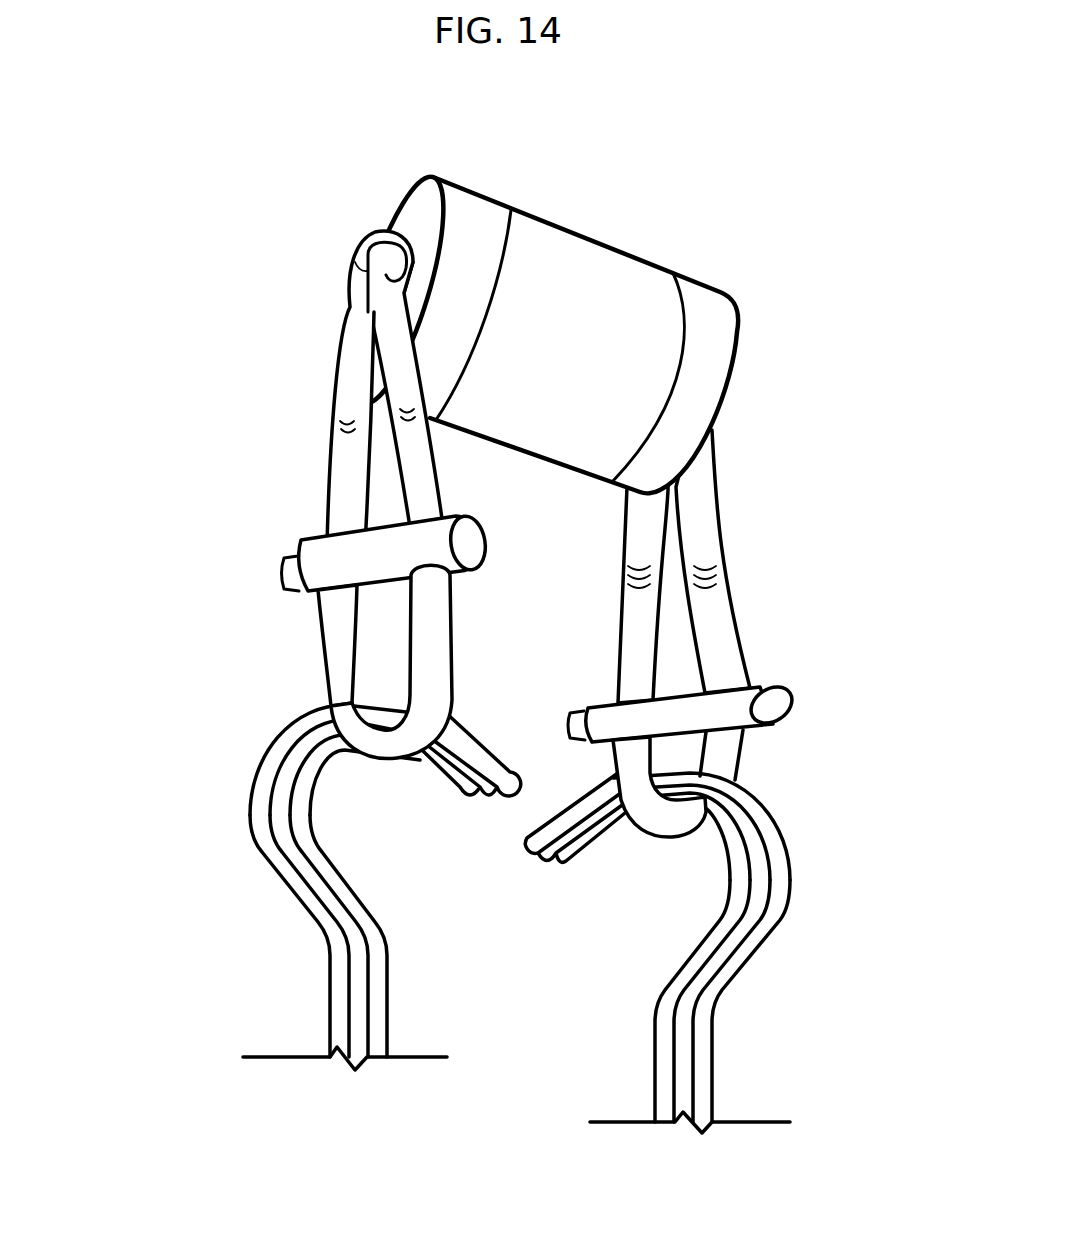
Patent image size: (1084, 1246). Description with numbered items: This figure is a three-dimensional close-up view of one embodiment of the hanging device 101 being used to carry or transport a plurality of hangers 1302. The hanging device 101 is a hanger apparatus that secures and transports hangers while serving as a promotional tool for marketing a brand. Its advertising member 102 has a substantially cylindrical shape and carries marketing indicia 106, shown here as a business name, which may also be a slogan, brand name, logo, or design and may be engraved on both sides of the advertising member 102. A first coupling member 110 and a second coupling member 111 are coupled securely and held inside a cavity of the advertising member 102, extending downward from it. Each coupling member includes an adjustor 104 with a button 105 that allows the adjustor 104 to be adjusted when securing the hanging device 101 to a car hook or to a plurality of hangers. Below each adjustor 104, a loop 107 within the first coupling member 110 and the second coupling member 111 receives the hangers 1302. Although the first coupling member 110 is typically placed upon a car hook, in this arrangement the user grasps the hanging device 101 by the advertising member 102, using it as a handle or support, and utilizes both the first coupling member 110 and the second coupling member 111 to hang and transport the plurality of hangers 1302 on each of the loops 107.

The hanging device 101 is at (180, 200).
The advertising member 102 is at (437, 176).
The adjustors 104 is at (314, 537).
The button 105 is at (567, 714).
The marketing indicia 106 is at (594, 300).
The loops 107 is at (387, 624).
The first coupling member 110 is at (322, 708).
The second coupling member 111 is at (655, 830).
The hangers 1302 is at (337, 977).